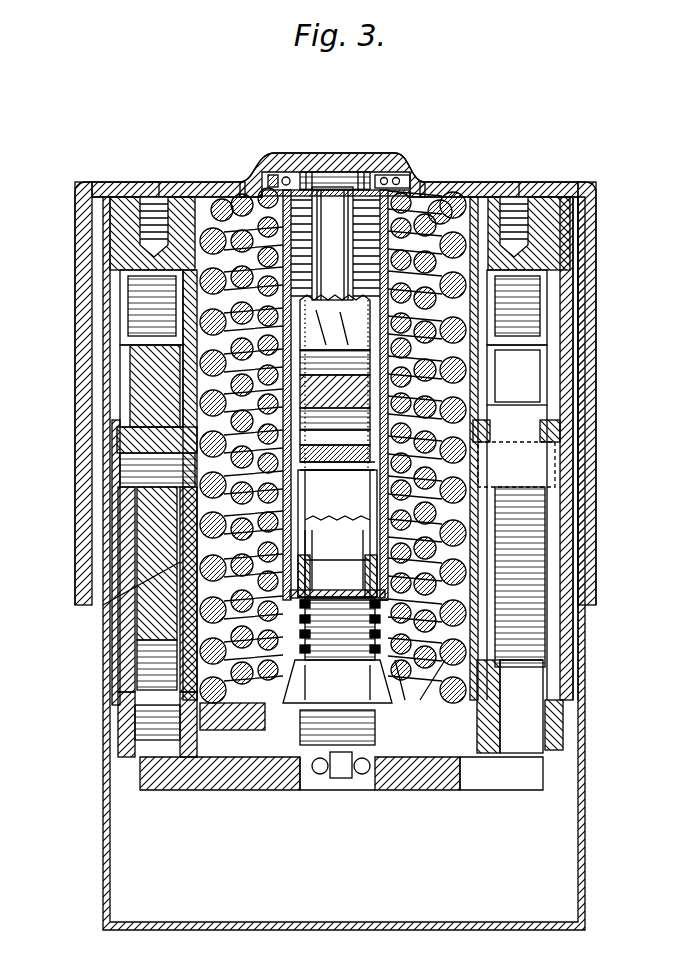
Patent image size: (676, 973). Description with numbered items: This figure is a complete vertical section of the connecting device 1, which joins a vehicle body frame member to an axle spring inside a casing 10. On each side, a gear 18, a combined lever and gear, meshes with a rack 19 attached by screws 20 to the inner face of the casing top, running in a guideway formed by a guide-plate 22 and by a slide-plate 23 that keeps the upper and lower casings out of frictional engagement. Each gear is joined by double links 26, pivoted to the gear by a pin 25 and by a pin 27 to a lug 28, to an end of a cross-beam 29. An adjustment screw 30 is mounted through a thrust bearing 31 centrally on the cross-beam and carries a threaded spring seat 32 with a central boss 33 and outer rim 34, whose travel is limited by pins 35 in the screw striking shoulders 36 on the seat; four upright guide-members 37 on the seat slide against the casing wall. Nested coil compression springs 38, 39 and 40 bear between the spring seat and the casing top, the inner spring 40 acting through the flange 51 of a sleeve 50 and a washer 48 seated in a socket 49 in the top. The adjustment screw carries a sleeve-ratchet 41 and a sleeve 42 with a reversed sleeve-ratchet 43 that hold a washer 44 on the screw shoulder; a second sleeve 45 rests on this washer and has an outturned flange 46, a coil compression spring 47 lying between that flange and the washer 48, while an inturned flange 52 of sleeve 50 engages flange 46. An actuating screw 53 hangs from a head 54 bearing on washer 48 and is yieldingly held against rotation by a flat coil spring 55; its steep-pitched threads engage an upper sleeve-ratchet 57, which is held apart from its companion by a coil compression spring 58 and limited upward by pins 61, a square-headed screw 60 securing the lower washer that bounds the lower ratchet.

The cap 1 is at (410, 180).
The housing 10 is at (296, 932).
The gear 18 is at (160, 525).
The rack 19 is at (125, 300).
The screws 20 is at (154, 200).
The guide-plate 22 is at (222, 322).
The slide-plate 23 is at (165, 340).
The pin 25 is at (150, 466).
The double links 26 is at (112, 600).
The pin 27 is at (150, 722).
The lug 28 is at (140, 708).
The cross-beam 29 is at (232, 790).
The adjustment screw 30 is at (312, 765).
The thrust bearing 31 is at (318, 778).
The spring seat 32 is at (255, 728).
The central boss 33 is at (310, 715).
The outer rim 34 is at (500, 690).
The pins 35 is at (335, 610).
The shoulders 36 is at (340, 660).
The guide-members 37 is at (200, 592).
The coil compression spring 38 is at (445, 690).
The coil compression spring 39 is at (448, 815).
The inner coil compression spring 40 is at (410, 700).
The sleeve-ratchet 41 is at (338, 525).
The sleeve 42 is at (352, 503).
The reversed sleeve-ratchet 43 is at (330, 300).
The washer 44 is at (395, 598).
The second sleeve 45 is at (490, 538).
The outturned flange 46 is at (340, 478).
The coil compression spring 47 is at (420, 196).
The washer 48 is at (262, 182).
The socket 49 is at (388, 175).
The sleeve 50 is at (448, 205).
The flange 51 is at (228, 200).
The inturned flange 52 is at (322, 528).
The actuating screw 53 is at (345, 190).
The head 54 is at (330, 172).
The flat coil spring 55 is at (288, 178).
The upper sleeve-ratchet 57 is at (335, 369).
The coil compression spring 58 is at (390, 402).
The screw 60 is at (335, 467).
The pins 61 is at (335, 322).